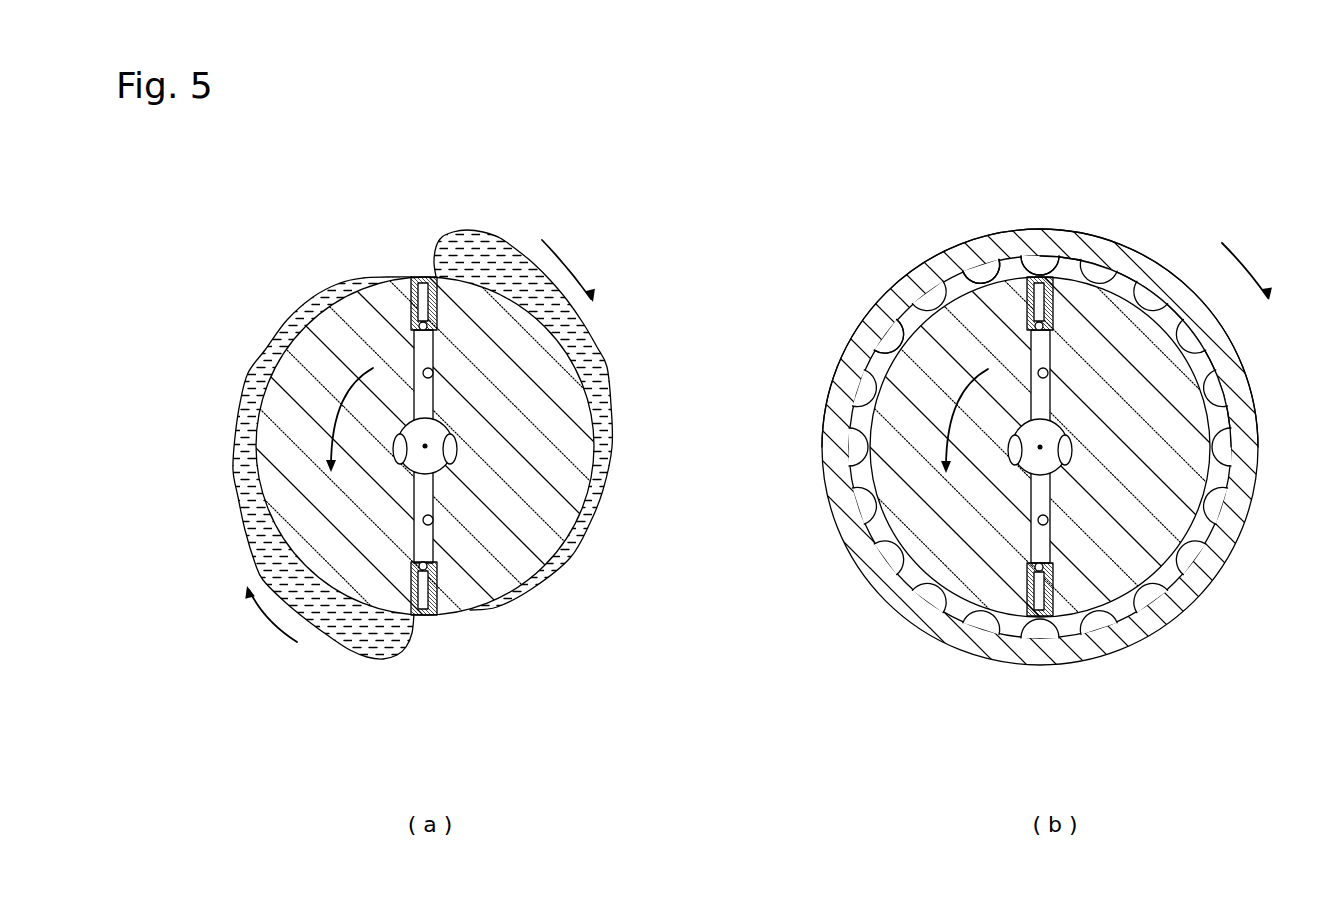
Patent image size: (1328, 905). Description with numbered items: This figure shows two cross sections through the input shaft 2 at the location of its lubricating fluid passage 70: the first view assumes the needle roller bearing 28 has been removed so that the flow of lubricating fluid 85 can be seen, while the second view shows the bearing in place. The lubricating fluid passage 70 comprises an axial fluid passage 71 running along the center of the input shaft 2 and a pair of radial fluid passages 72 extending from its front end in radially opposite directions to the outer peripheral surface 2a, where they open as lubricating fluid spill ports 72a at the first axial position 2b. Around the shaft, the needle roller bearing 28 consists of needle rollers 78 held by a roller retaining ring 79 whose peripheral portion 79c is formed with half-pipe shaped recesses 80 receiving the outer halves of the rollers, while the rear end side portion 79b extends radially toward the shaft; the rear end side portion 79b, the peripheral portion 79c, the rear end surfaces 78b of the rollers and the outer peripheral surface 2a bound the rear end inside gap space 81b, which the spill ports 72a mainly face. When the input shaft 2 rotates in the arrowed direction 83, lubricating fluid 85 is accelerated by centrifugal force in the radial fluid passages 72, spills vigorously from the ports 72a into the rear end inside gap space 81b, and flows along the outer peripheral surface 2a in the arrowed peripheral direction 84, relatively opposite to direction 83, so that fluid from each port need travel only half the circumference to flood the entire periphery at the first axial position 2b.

The input shaft 2 is at (901, 450).
The outer peripheral surface 2a is at (528, 580).
The first axial position 2b is at (578, 553).
The needle roller bearing 28 is at (1087, 230).
The lubricating fluid passage 70 is at (397, 460).
The axial fluid passage 71 is at (452, 466).
The radial fluid passages 72 is at (433, 372).
The lubricating fluid spill ports 72a is at (418, 274).
The needle rollers 78 is at (1143, 253).
The rear end surfaces 78b is at (1131, 252).
The roller retaining ring 79 is at (1058, 230).
The rear end side portion 79b is at (1029, 230).
The peripheral portion 79c is at (1008, 232).
The half-pipe shaped recesses 80 is at (980, 240).
The rear end inside gap space 81b is at (886, 298).
The arrowed direction 83 is at (330, 405).
The arrowed peripheral direction 84 is at (572, 262).
The lubricating fluid 85 is at (476, 234).